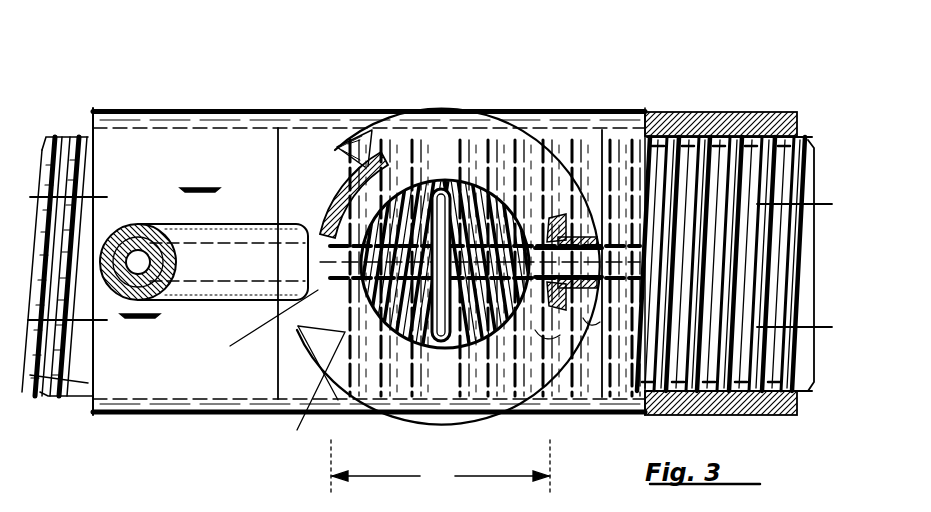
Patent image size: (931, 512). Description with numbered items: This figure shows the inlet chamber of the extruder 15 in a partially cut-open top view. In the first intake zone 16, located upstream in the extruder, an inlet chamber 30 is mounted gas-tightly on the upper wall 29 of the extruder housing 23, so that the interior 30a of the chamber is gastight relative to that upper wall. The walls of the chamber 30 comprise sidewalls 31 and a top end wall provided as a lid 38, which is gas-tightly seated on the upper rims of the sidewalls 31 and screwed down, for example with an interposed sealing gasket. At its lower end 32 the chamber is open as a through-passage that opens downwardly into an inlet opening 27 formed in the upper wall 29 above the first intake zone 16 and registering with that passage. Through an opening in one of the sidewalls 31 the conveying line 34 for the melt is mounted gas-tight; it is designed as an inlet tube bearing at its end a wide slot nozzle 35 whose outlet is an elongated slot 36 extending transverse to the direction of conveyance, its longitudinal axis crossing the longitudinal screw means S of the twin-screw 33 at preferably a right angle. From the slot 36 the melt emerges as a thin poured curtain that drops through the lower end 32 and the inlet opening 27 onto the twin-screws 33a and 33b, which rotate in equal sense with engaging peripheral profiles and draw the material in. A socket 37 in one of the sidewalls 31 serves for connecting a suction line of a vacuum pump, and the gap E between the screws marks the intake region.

The extruder 15 is at (204, 94).
The first intake zone 16 is at (440, 466).
The extruder housing 23 is at (714, 110).
The inlet opening 27 is at (486, 346).
The upper wall of the extruder housing 29 is at (275, 312).
The inlet chamber 30 is at (334, 180).
The interior of the inlet chamber 30a is at (382, 158).
The chamber sidewalls 31 is at (311, 293).
The lower end of the chamber 32 is at (330, 235).
The twin-screw 33 is at (808, 259).
The first twin-screw 33a is at (59, 134).
The second twin-screw 33b is at (80, 397).
The conveying line 34 is at (143, 226).
The wide slot nozzle 35 is at (480, 263).
The elongated slot 36 is at (430, 336).
The socket 37 is at (607, 247).
The lid 38 is at (522, 384).
The gap E is at (538, 349).
The longitudinal screw means S is at (438, 266).